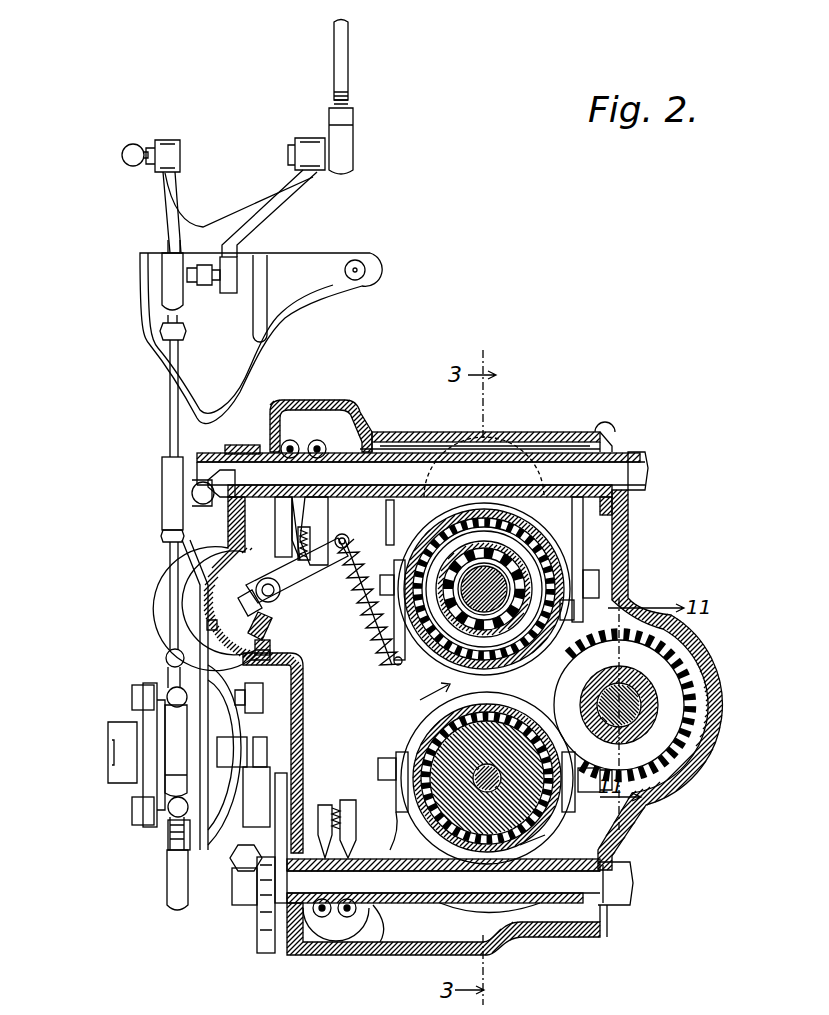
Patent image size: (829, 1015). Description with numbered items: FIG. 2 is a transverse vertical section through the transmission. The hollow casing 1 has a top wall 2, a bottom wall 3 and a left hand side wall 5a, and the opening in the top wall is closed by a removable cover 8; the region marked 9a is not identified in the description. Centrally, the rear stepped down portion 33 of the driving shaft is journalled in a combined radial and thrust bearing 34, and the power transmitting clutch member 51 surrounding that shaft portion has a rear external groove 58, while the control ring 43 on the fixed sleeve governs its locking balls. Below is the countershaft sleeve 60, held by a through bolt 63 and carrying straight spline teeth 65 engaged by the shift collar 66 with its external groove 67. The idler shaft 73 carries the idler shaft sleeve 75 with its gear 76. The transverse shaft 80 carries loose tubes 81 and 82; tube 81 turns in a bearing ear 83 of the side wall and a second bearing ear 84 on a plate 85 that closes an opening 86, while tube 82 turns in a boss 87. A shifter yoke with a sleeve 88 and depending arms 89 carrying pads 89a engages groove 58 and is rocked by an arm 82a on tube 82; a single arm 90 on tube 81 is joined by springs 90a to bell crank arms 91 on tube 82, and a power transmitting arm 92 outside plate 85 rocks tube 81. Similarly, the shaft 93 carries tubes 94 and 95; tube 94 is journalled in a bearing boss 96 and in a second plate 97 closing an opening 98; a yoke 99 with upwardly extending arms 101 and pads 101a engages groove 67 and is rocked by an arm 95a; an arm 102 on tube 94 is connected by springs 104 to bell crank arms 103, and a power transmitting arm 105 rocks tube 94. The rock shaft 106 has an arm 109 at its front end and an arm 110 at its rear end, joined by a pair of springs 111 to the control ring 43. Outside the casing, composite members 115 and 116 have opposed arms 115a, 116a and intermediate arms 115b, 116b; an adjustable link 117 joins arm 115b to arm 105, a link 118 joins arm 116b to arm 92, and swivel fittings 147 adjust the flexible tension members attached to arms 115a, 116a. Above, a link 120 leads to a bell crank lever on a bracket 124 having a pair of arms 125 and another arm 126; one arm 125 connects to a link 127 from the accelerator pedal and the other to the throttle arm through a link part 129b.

The casing 1 is at (437, 736).
The top wall 2 is at (560, 447).
The bottom wall 3 is at (362, 955).
The left hand side wall 5a is at (303, 672).
The removable cover 8 is at (515, 445).
The housing side wall 9a is at (645, 545).
The stepped down portion 33 is at (484, 589).
The combined antifriction radial and thrust bearing 34 is at (530, 545).
The control ring 43 is at (410, 673).
The power transmitting clutch member 51 is at (427, 692).
The external groove 58 is at (488, 562).
The countershaft sleeve 60 is at (462, 826).
The through bolt 63 is at (487, 778).
The straight spline teeth 65 is at (548, 815).
The shift collar 66 is at (408, 724).
The external groove 67 is at (541, 850).
The idler shaft 73 is at (619, 705).
The idler shaft sleeve 75 is at (670, 710).
The gear 76 is at (735, 676).
The transversely extending shaft 80 is at (422, 471).
The tube 81 is at (245, 462).
The tube 82 is at (330, 468).
The arm 82a is at (386, 524).
The bearing ear 83 is at (280, 450).
The second bearing ear 84 is at (238, 443).
The plate 85 is at (240, 520).
The opening 86 is at (272, 645).
The boss 87 is at (368, 432).
The sleeve 88 is at (452, 442).
The depending arms 89 is at (583, 515).
The pad 89a is at (405, 635).
The single arm 90 is at (290, 527).
The springs 90a is at (293, 550).
The bell crank arms 91 is at (313, 531).
The power transmitting arm 92 is at (200, 505).
The transversely extending shaft 93 is at (424, 885).
The tube 94 is at (310, 871).
The tube 95 is at (370, 871).
The arm 95a is at (396, 800).
The bearing boss 96 is at (300, 910).
The second plate 97 is at (287, 778).
The opening 98 is at (291, 797).
The yoke 99 is at (468, 898).
The upwardly extending arms 101 is at (580, 812).
The pad 101a is at (374, 766).
The arm 102 is at (328, 831).
The bell crank arms 103 is at (356, 829).
The springs 104 is at (338, 805).
The power transmitting arm 105 is at (235, 905).
The rock shaft 106 is at (268, 578).
The arm 109 is at (218, 588).
The arm 110 is at (285, 592).
The springs 111 is at (353, 585).
The composite member 115 is at (143, 743).
The arms 115a is at (132, 810).
The intermediate arm 115b is at (132, 700).
The composite member 116 is at (222, 818).
The arms 116a is at (235, 685).
The intermediate arm 116b is at (247, 735).
The adjustable link 117 is at (168, 832).
The link 118 is at (172, 580).
The link 120 is at (170, 428).
The bracket 124 is at (282, 327).
The arms 125 is at (164, 170).
The arm 126 is at (205, 292).
The link 127 is at (350, 70).
The link part 129b is at (122, 155).
The swivel fittings 147 is at (167, 657).